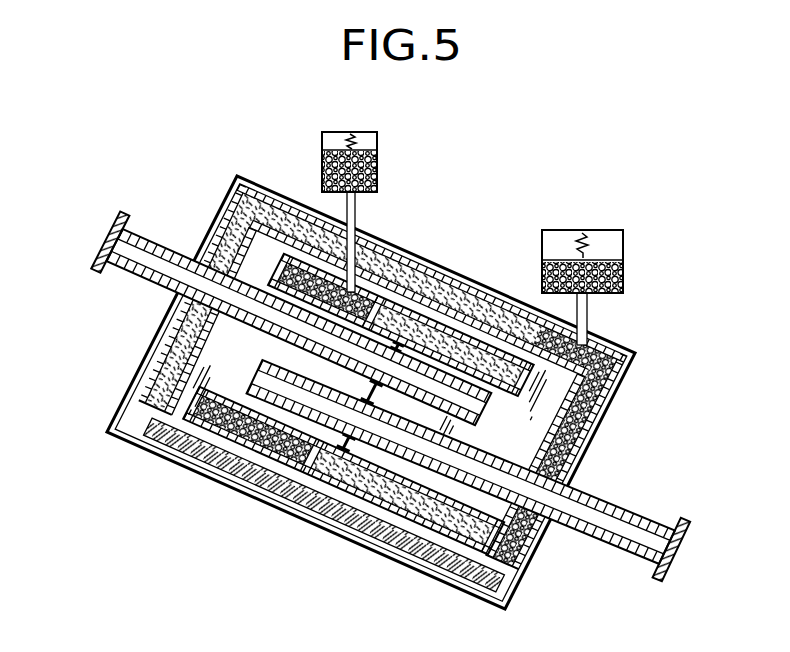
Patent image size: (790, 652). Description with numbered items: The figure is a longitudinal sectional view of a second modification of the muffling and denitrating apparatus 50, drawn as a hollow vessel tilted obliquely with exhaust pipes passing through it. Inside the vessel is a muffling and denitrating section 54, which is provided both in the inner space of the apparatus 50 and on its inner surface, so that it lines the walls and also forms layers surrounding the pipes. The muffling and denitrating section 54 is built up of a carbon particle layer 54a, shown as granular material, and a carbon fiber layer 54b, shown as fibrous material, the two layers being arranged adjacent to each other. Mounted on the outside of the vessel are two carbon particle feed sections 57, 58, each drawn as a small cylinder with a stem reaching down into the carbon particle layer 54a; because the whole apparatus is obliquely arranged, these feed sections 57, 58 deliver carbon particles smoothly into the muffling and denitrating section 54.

The muffling and denitrating apparatus 50 is at (214, 195).
The muffling and denitrating section 54 is at (165, 360).
The carbon particle layer 54a is at (590, 427).
The carbon fiber layer 54b is at (407, 267).
The carbon particle feed section 57 is at (382, 160).
The carbon particle feed section 58 is at (623, 247).